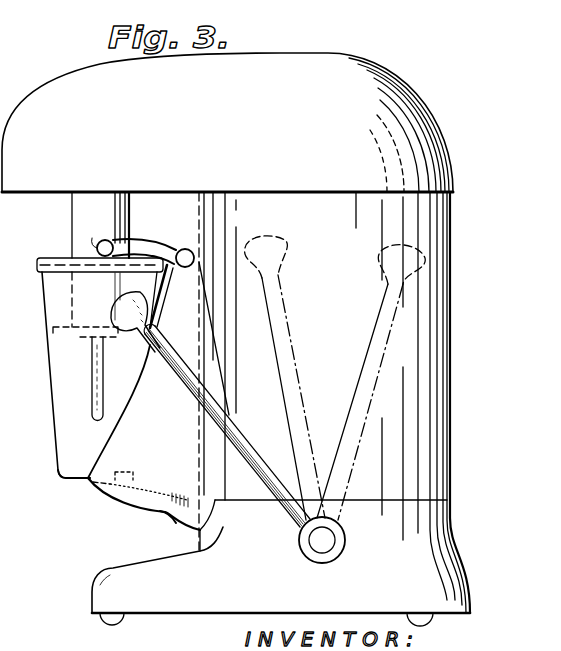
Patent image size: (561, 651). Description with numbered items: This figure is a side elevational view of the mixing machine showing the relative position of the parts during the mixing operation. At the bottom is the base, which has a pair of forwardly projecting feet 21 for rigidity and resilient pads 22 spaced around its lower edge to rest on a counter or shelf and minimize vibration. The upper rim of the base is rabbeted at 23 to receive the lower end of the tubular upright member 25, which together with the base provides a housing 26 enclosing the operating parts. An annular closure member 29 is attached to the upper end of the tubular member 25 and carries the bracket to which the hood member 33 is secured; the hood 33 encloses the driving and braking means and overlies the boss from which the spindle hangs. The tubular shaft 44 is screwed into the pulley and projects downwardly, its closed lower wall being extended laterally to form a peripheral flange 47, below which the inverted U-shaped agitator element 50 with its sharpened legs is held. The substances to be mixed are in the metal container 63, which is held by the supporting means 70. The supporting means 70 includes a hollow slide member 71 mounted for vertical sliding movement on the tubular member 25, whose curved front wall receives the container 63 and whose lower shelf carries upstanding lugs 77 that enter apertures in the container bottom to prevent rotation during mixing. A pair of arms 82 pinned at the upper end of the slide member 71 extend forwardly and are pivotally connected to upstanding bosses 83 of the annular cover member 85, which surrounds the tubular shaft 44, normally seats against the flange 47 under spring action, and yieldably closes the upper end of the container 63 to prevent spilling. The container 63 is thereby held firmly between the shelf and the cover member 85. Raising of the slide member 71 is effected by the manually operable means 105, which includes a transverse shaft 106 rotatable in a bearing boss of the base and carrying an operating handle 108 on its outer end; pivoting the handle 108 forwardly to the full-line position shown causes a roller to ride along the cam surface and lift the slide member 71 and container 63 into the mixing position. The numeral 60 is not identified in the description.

The rabbet 23 is at (94, 8).
The motor 60 is at (11, 34).
The annular closure member 29 is at (0, 62).
The hood member 33 is at (400, 84).
The tubular shaft 44 is at (75, 204).
The upstanding bosses 83 is at (96, 237).
The arms 82 is at (158, 242).
The annular cover member 85 is at (38, 262).
The peripheral flange 47 is at (53, 347).
The agitator element 50 is at (92, 393).
The container 63 is at (68, 459).
The upstanding lugs 77 is at (135, 470).
The supporting means 70 is at (103, 506).
The slide member 71 is at (166, 516).
The feet 21 is at (115, 572).
The resilient pads 22 is at (104, 614).
The transverse shaft 106 is at (318, 546).
The manually operable means 105 is at (349, 552).
The operating handle 108 is at (243, 433).
The tubular upright member 25 is at (448, 333).
The housing 26 is at (458, 412).